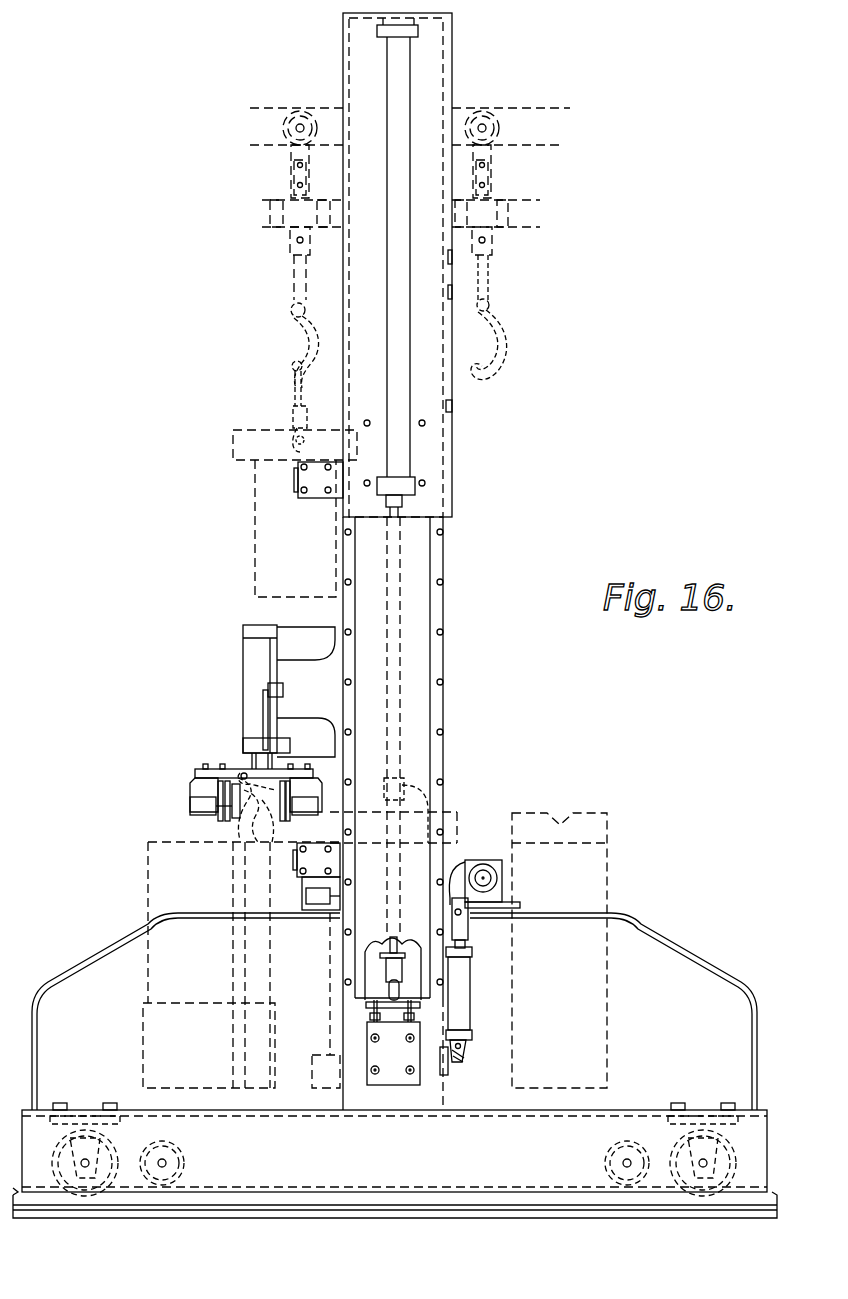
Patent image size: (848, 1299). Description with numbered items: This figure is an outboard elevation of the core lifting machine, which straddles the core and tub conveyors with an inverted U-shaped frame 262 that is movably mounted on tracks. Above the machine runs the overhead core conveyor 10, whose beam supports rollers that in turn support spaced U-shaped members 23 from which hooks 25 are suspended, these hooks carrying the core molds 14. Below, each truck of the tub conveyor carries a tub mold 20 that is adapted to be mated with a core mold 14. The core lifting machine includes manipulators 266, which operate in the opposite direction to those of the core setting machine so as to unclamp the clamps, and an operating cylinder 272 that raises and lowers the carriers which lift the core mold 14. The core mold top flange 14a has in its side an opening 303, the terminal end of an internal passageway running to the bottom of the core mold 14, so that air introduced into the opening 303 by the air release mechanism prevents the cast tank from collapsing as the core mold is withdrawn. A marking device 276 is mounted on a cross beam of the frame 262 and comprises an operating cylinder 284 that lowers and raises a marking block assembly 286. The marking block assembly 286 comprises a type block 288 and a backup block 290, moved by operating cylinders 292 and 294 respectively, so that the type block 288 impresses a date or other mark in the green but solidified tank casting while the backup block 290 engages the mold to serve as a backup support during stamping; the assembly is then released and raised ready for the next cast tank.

The overhead core conveyor 10 is at (493, 152).
The core mold 14 is at (255, 547).
The core mold top flange 14a is at (233, 448).
The tub mold 20 is at (148, 897).
The U-shaped member 23 is at (488, 280).
The hook 25 is at (502, 342).
The inverted U-shaped frame 262 is at (447, 478).
The manipulator 266 is at (482, 854).
The operating cylinder 272 is at (410, 447).
The marking device 276 is at (230, 757).
The operating cylinder 284 is at (245, 660).
The marking block assembly 286 is at (197, 770).
The type block 288 is at (240, 838).
The backup block 290 is at (270, 840).
The operating cylinder 292 is at (200, 815).
The operating cylinder 294 is at (302, 808).
The opening 303 is at (300, 447).